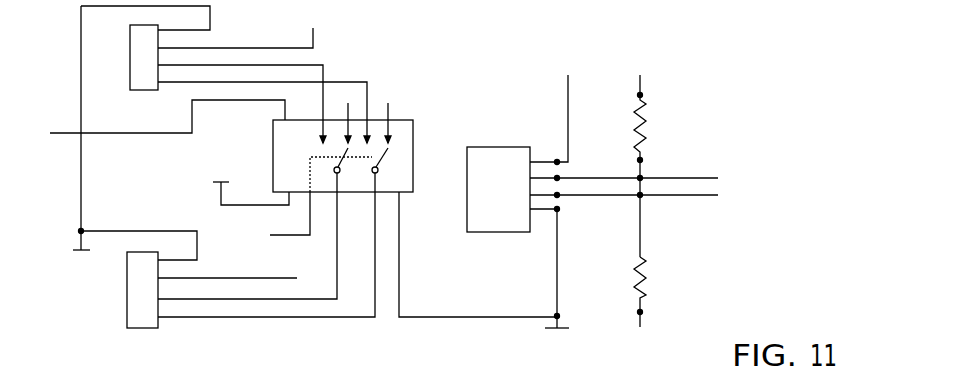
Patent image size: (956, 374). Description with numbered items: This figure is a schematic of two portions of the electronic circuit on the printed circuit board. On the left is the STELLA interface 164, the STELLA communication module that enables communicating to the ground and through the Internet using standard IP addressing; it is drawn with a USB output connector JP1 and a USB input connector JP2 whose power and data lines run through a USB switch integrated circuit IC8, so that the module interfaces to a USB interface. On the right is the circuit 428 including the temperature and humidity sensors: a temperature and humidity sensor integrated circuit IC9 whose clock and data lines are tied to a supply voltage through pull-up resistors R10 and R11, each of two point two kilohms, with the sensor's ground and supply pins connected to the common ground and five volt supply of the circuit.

The STELLA interface 164 is at (438, 73).
The circuit including temperature and humidity sensors 428 is at (728, 120).
The USB output connector JP1 is at (145, 49).
The USB input connector JP2 is at (139, 279).
The MAX4908ELA USB switch IC8 is at (347, 155).
The SHT1X temperature and humidity sensor IC9 is at (478, 209).
The 2.2k pull-up resistor R10 is at (641, 119).
The 2.2k pull-up resistor R11 is at (642, 292).